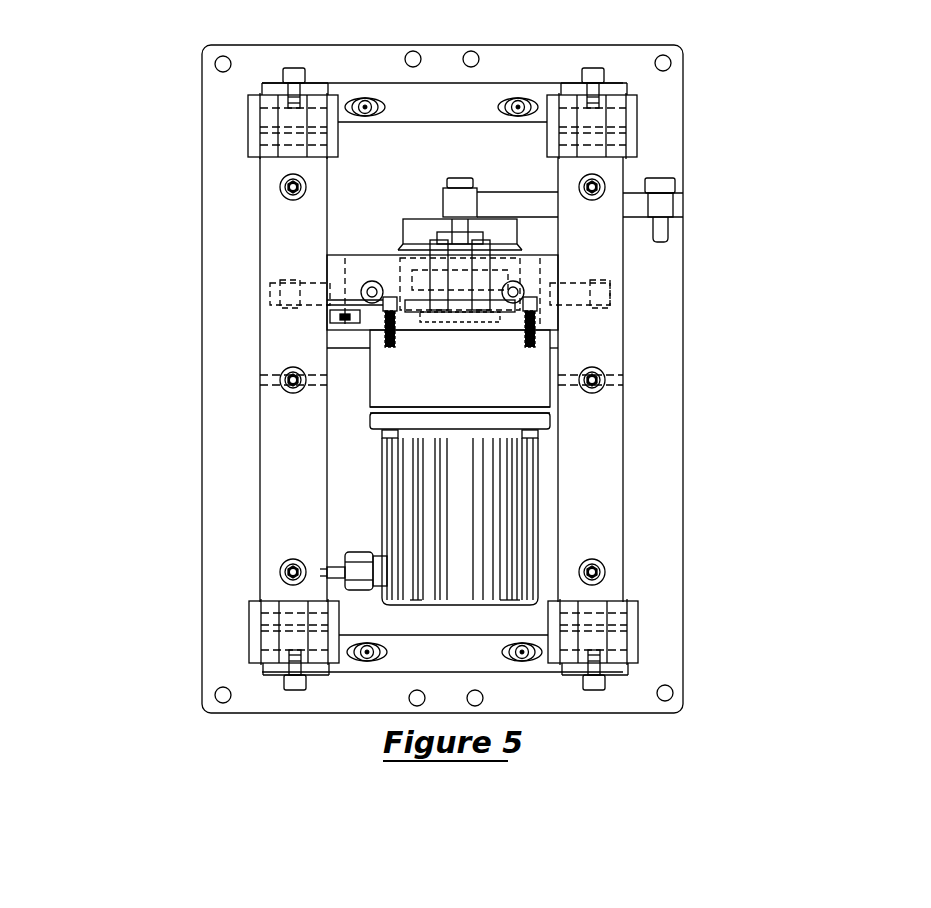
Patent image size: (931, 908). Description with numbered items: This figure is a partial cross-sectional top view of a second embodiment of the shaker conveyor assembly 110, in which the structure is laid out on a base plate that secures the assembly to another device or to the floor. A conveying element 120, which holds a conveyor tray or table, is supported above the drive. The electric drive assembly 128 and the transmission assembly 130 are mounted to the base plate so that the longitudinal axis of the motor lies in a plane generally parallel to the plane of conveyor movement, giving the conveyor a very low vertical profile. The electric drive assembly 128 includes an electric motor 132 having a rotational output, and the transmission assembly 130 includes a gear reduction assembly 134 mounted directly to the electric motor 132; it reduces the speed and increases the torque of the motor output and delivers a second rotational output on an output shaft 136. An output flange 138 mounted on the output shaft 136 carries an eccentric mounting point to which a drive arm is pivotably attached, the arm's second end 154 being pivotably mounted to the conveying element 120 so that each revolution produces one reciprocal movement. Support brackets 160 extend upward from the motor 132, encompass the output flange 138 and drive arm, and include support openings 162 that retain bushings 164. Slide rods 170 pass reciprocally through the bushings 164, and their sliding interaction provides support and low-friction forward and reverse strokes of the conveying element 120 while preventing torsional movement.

The shaker conveyor assembly 110 is at (155, 78).
The conveying element 120 is at (165, 138).
The electric drive assembly 128 is at (362, 505).
The transmission assembly 130 is at (570, 443).
The electric motor 132 is at (536, 540).
The gear reduction assembly 134 is at (553, 400).
The output shaft 136 is at (495, 335).
The output flange 138 is at (520, 235).
The second end 154 is at (680, 222).
The support brackets 160 is at (553, 83).
The support openings 162 is at (262, 162).
The bushings 164 is at (253, 138).
The slide rods 170 is at (262, 247).